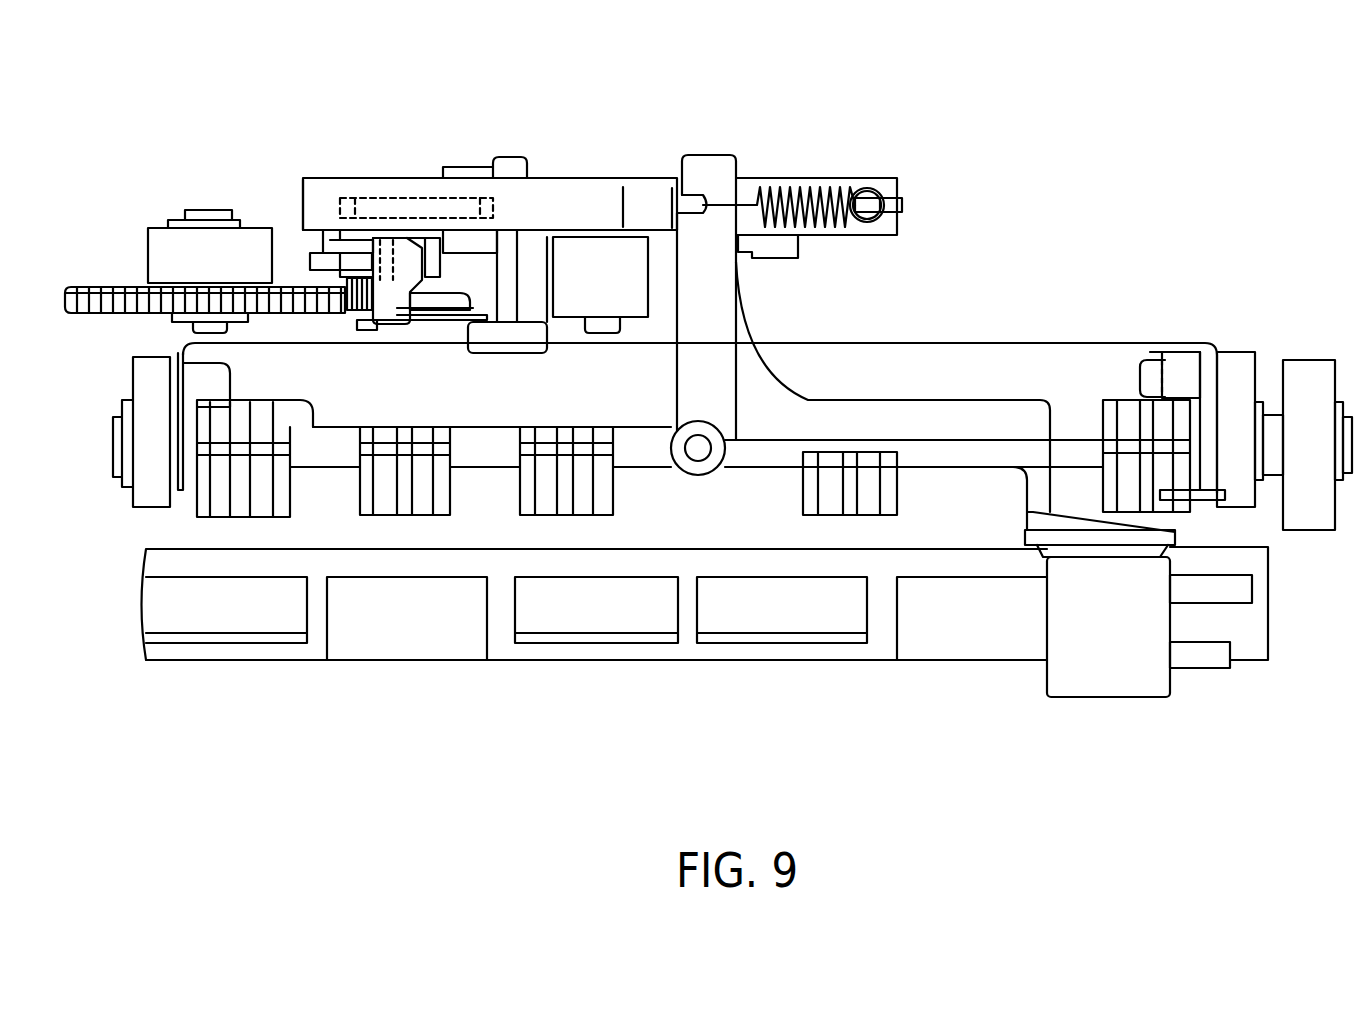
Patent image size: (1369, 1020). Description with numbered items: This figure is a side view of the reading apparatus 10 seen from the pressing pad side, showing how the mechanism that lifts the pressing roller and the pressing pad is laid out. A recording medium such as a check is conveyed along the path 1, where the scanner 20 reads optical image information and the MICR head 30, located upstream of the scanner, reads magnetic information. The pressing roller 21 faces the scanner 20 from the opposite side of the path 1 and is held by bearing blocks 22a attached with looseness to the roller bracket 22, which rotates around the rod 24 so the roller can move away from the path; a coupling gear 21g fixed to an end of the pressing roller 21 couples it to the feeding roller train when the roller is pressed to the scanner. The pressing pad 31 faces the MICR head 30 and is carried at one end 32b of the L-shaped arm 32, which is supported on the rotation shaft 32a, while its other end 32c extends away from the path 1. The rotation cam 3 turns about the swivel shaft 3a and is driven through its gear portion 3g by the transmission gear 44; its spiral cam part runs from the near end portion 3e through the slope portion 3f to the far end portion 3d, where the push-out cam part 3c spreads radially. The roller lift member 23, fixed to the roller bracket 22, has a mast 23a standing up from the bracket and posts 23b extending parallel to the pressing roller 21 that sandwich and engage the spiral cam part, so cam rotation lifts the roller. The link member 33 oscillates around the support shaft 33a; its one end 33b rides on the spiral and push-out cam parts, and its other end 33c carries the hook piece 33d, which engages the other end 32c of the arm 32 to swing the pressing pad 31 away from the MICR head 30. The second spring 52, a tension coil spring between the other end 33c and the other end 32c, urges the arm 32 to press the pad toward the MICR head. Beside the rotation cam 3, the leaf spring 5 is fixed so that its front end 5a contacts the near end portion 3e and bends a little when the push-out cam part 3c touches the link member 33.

The path 1 is at (884, 548).
The rotation cam 3 is at (425, 240).
The swivel shaft 3a is at (405, 330).
The push-out cam part 3c is at (386, 200).
The far end portion 3d is at (455, 185).
The near end portion 3e is at (317, 262).
The slope portion 3f is at (327, 237).
The gear portion 3g is at (357, 318).
The leaf spring 5 is at (393, 300).
The front end 5a is at (412, 272).
The reading apparatus 10 is at (972, 203).
The scanner 20 is at (692, 665).
The pressing roller 21 is at (567, 520).
The coupling gear 21g is at (1318, 360).
The roller bracket 22 is at (960, 343).
The bearing blocks 22a is at (140, 493).
The roller lift member 23 is at (522, 157).
The mast 23a is at (515, 283).
The posts 23b is at (470, 167).
The rod 24 is at (1141, 356).
The MICR head 30 is at (1100, 698).
The pressing pad 31 is at (1130, 548).
The arm 32 is at (808, 403).
The rotation shaft 32a is at (698, 457).
The one end 32b is at (1037, 400).
The other end 32c is at (705, 160).
The link member 33 is at (588, 185).
The support shaft 33a is at (600, 335).
The one end 33b is at (308, 180).
The other end 33c is at (873, 180).
The hook piece 33d is at (765, 258).
The transmission gear 44 is at (83, 290).
The second spring 52 is at (800, 182).